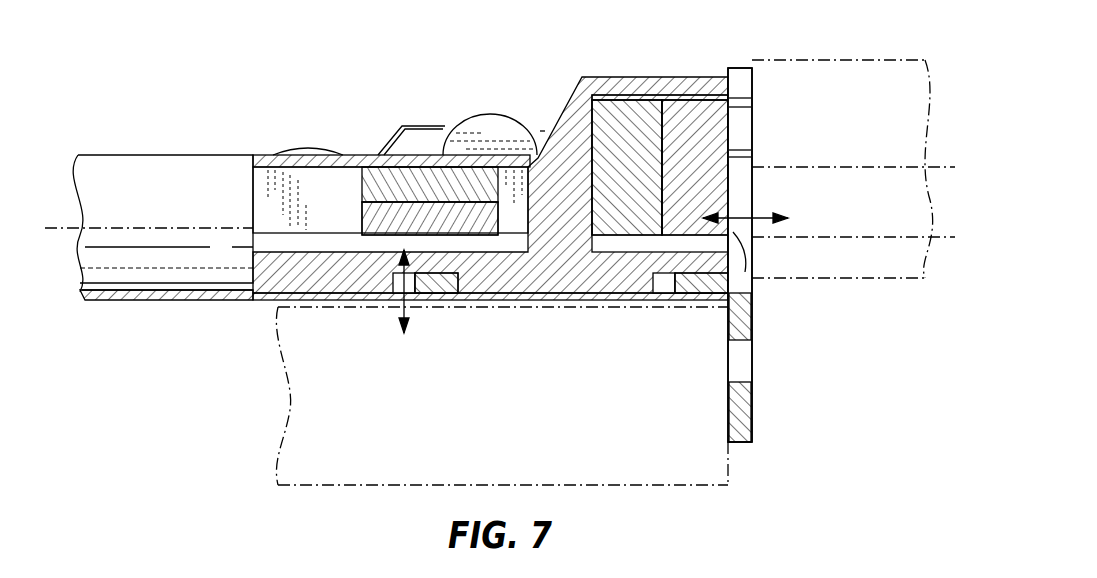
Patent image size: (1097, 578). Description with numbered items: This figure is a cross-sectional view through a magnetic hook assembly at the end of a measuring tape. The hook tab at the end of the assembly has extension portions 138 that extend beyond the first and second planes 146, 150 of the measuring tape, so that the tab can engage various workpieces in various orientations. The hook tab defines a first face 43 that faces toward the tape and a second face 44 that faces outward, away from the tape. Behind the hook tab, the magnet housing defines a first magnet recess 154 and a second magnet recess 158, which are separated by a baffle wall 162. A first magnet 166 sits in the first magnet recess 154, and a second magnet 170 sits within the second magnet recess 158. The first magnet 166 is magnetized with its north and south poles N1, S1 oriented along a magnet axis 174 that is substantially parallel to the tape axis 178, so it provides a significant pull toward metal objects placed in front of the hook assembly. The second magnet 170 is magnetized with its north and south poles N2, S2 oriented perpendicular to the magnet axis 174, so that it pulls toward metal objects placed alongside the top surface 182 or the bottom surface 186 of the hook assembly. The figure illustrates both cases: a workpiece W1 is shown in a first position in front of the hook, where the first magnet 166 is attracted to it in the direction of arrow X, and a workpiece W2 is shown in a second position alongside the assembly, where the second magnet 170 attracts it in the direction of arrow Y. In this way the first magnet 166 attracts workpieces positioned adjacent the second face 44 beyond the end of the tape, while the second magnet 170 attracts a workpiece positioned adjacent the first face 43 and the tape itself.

The second plane of the measuring tape 150 is at (195, 153).
The first plane of the measuring tape 146 is at (172, 303).
The second magnet recess 158 is at (323, 176).
The top surface 182 is at (366, 165).
The south pole of the second magnet S2 is at (432, 185).
The north pole of the second magnet N2 is at (447, 217).
The second magnet 170 is at (373, 215).
The baffle wall 162 is at (562, 138).
The first magnet 166 is at (629, 112).
The first magnet recess 154 is at (693, 107).
The south pole of the first magnet S1 is at (627, 167).
The north pole of the first magnet N1 is at (695, 167).
The magnet axis 174 is at (872, 167).
The tape axis 178 is at (872, 237).
The workpiece W1 is at (838, 60).
The workpiece W2 is at (330, 482).
The arrow X is at (757, 216).
The arrow Y is at (393, 305).
The bottom surface 186 is at (550, 302).
The first face 43 is at (727, 408).
The second face 44 is at (753, 413).
The extension portions 138 is at (742, 443).